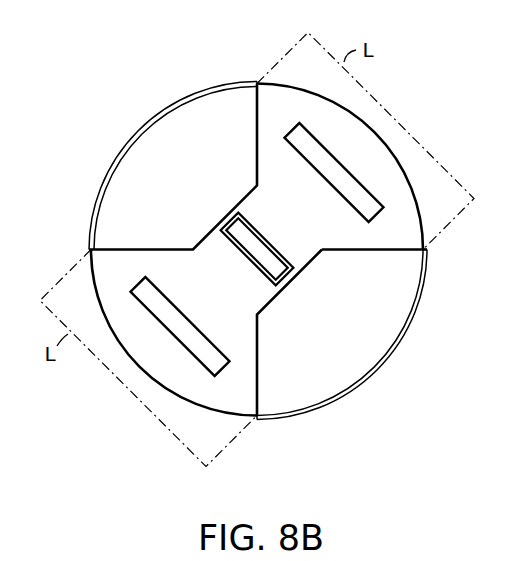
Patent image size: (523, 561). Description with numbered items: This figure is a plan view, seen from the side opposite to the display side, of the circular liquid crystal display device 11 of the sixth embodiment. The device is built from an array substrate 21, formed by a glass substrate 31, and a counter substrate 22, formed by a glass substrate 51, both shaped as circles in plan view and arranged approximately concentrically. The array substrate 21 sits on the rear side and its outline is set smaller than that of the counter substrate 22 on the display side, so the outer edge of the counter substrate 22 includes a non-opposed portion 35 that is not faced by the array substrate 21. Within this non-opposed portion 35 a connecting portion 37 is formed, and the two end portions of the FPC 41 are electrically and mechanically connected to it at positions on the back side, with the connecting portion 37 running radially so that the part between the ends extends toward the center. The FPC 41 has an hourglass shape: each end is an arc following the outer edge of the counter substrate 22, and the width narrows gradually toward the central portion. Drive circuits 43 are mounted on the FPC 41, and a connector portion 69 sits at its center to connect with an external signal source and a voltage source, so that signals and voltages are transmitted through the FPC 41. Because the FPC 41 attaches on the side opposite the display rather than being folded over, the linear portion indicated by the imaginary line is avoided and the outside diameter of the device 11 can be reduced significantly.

The liquid crystal display device 11 is at (399, 66).
The array substrate 21 is at (340, 341).
The glass substrate 31 is at (348, 387).
The counter substrate 22 is at (353, 335).
The glass substrate 51 is at (390, 350).
The non-opposed portion 35 is at (157, 118).
The connecting portion 37 is at (374, 138).
The FPC 41 is at (409, 232).
The drive circuit 43 is at (369, 188).
The connector portion 69 is at (283, 280).